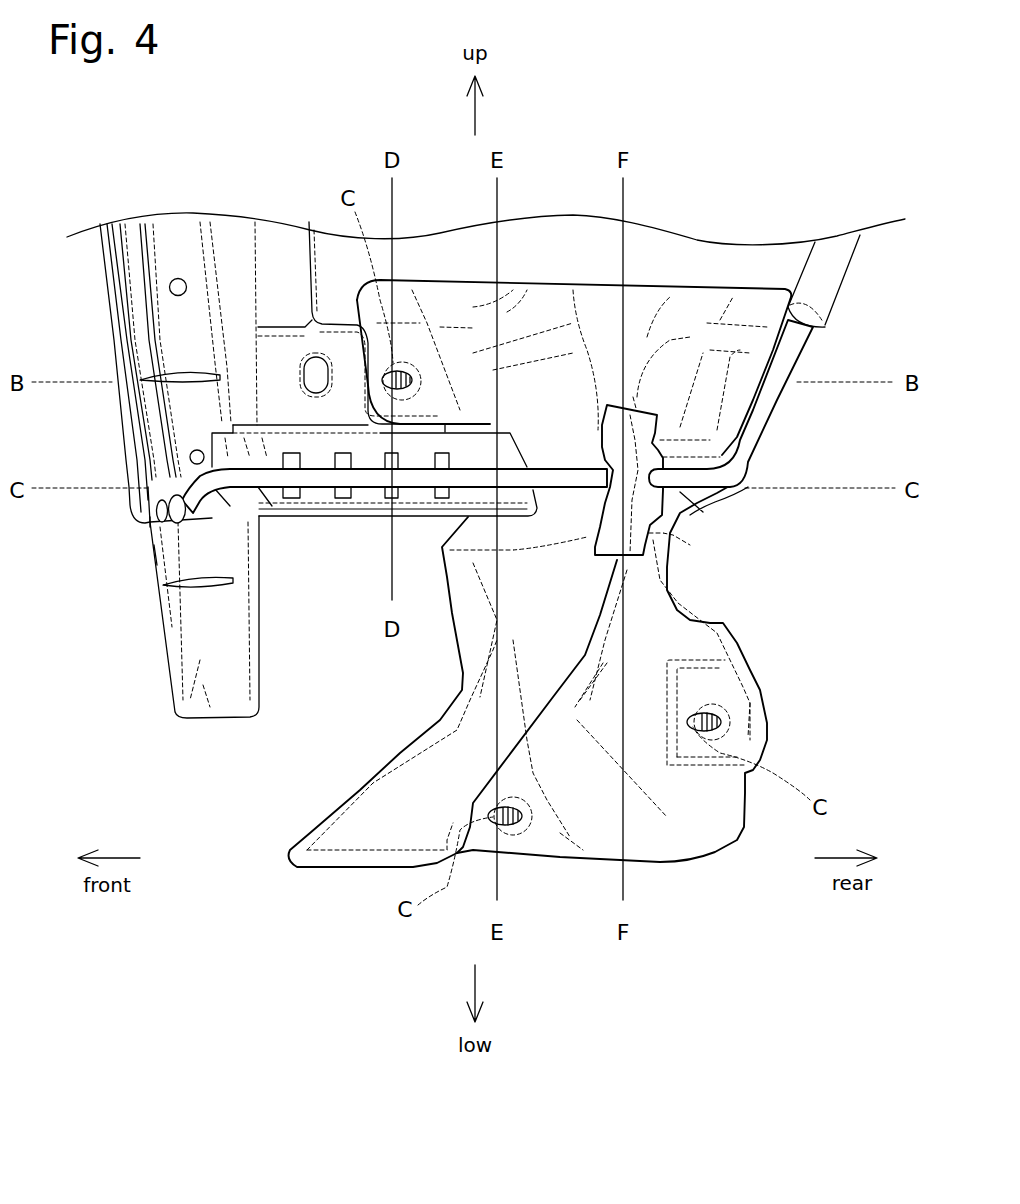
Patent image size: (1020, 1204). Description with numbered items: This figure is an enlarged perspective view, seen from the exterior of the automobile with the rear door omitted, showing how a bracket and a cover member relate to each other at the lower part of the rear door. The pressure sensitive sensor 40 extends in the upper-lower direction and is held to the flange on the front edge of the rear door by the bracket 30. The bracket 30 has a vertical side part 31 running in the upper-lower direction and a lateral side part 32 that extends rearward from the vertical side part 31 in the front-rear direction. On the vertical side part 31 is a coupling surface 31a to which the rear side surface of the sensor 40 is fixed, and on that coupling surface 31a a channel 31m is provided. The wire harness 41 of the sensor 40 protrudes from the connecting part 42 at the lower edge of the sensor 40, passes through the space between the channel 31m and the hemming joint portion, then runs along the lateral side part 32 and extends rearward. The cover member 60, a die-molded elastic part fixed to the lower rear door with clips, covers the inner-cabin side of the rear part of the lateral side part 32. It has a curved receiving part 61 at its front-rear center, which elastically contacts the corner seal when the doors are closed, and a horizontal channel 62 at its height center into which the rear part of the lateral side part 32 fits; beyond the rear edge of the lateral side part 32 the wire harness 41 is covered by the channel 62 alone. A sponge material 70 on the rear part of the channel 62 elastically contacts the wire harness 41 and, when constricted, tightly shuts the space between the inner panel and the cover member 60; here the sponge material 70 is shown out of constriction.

The bracket 30 is at (277, 601).
The vertical side part 31 is at (177, 710).
The coupling surface 31a is at (165, 557).
The channel 31m is at (150, 517).
The lateral side part 32 is at (367, 500).
The sensor 40 is at (104, 312).
The wire harness 41 is at (278, 492).
The connecting part 42 is at (135, 510).
The cover member 60 is at (579, 675).
The receiving part 61 is at (377, 810).
The channel 62 is at (707, 517).
The sponge material 70 is at (675, 530).